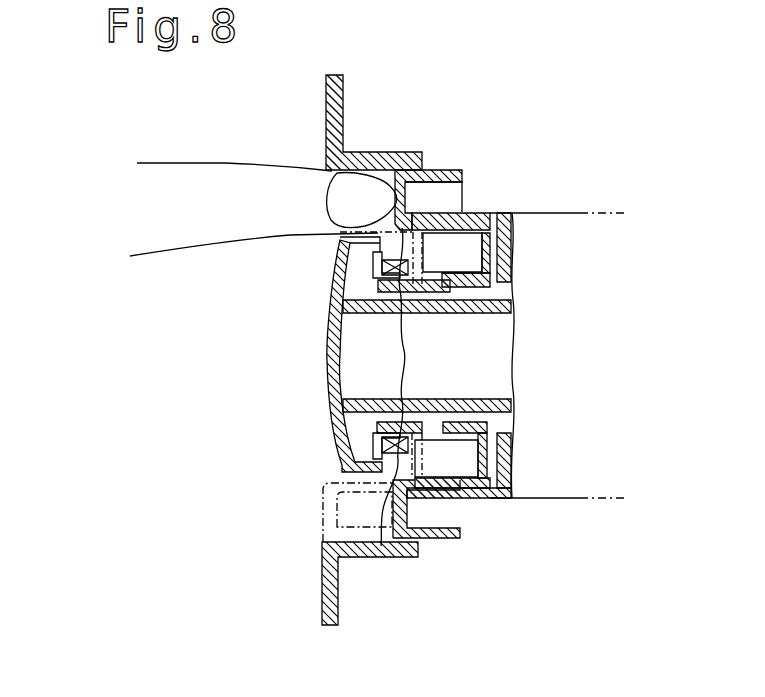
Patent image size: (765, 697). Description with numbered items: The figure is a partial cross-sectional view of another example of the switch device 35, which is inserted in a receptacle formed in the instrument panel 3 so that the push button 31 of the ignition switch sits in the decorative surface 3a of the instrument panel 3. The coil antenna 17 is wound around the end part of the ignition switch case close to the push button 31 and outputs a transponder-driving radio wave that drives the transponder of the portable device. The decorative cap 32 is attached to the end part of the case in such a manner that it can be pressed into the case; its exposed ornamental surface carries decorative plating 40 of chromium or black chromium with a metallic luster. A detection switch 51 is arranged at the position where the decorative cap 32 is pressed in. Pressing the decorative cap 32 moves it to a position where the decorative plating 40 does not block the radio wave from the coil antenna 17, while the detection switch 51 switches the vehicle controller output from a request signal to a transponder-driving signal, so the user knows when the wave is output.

The instrument panel 3 is at (353, 98).
The decorative surface 3a is at (327, 110).
The coil antenna 17 is at (411, 387).
The push button 31 is at (336, 436).
The decorative cap 32 is at (457, 178).
The switch device 35 is at (559, 177).
The decorative plating 40 is at (382, 546).
The detection switch 51 is at (500, 250).